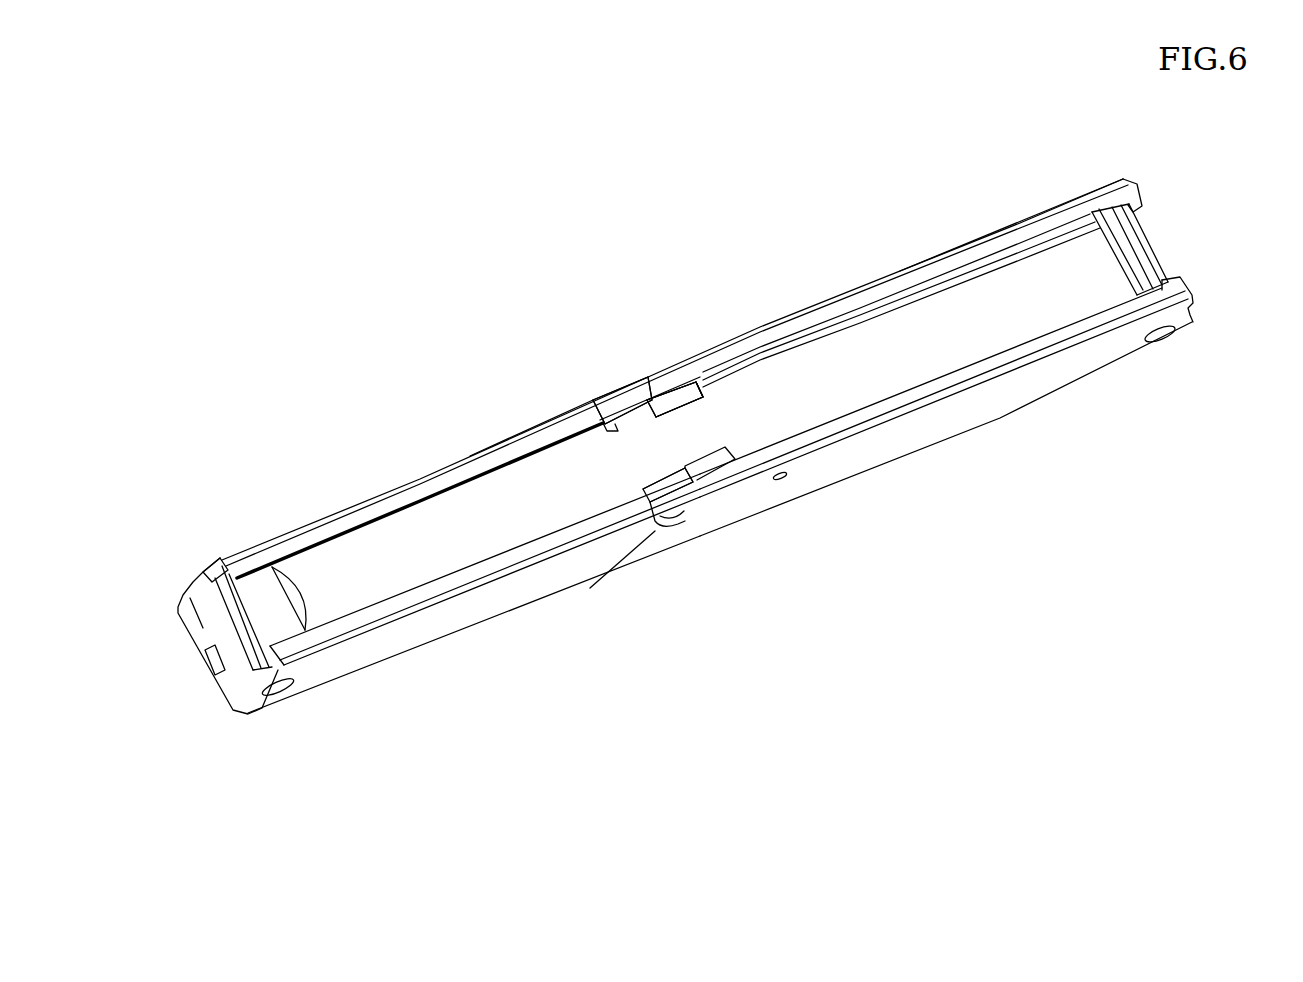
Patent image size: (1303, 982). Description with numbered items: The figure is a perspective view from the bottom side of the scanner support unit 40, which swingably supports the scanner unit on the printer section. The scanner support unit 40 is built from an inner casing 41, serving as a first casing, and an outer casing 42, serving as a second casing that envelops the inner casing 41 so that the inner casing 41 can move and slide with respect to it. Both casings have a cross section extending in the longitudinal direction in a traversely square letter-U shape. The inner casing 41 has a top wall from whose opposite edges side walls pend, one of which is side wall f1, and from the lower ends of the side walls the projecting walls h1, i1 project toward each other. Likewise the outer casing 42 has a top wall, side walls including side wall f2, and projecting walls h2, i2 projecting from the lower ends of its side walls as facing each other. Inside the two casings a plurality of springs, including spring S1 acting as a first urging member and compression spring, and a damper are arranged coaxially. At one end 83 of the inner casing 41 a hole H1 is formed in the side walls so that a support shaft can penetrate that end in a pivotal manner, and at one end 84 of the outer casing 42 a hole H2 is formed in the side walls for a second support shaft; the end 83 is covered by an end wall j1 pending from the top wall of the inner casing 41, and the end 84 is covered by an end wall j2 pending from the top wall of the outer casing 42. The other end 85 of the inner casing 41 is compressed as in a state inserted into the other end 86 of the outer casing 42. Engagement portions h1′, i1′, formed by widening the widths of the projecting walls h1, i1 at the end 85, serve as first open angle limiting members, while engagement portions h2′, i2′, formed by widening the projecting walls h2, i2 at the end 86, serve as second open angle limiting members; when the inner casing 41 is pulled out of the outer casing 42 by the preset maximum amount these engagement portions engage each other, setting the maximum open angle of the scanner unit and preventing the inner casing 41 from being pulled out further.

The scanner support unit 40 is at (617, 238).
The inner casing 41 is at (527, 432).
The outer casing 42 is at (650, 374).
The other end of the inner casing 85 is at (697, 393).
The other end of the outer casing 86 is at (652, 500).
The one end of the inner casing 83 is at (237, 713).
The one end of the outer casing 84 is at (1190, 320).
The projecting wall i1 is at (412, 483).
The projecting wall i2 is at (1015, 227).
The engagement portion i1′ is at (687, 397).
The engagement portion i2′ is at (628, 408).
The spring S1 is at (943, 310).
The end wall j1 is at (208, 643).
The end wall j2 is at (1137, 241).
The projecting wall h1 is at (536, 550).
The projecting wall h2 is at (1010, 369).
The engagement portion h1′ is at (715, 465).
The engagement portion h2′ is at (683, 490).
The side wall f1 is at (450, 622).
The side wall f2 is at (926, 432).
The hole H1 is at (284, 690).
The hole H2 is at (1157, 336).